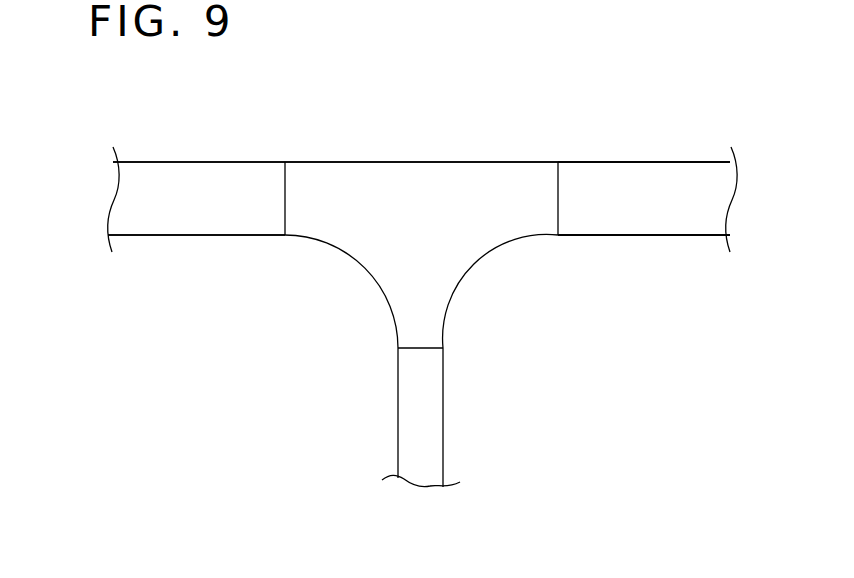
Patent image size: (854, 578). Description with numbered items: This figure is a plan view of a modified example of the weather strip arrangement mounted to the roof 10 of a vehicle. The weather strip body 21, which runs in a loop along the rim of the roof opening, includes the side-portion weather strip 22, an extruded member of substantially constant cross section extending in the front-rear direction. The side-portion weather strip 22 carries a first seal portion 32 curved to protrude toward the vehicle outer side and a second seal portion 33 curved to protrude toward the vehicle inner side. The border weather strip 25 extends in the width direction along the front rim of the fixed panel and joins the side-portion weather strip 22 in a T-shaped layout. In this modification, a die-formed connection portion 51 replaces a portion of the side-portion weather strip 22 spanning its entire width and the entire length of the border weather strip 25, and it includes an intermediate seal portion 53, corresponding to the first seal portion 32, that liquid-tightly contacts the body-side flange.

The roof 10 is at (358, 147).
The weather strip body 21 is at (644, 198).
The side-portion weather strip 22 is at (593, 160).
The border weather strip 25 is at (445, 433).
The first seal portion 32 is at (201, 162).
The second seal portion 33 is at (203, 236).
The connection portion 51 is at (348, 255).
The intermediate seal portion 53 is at (441, 162).